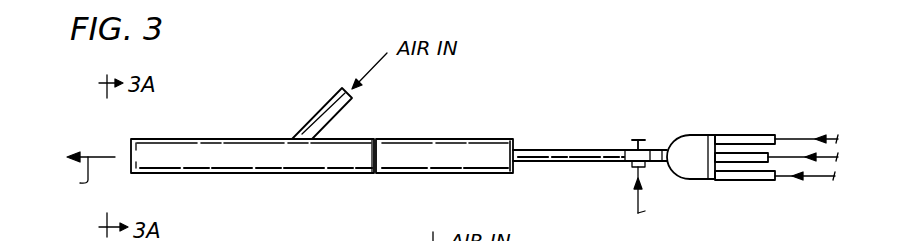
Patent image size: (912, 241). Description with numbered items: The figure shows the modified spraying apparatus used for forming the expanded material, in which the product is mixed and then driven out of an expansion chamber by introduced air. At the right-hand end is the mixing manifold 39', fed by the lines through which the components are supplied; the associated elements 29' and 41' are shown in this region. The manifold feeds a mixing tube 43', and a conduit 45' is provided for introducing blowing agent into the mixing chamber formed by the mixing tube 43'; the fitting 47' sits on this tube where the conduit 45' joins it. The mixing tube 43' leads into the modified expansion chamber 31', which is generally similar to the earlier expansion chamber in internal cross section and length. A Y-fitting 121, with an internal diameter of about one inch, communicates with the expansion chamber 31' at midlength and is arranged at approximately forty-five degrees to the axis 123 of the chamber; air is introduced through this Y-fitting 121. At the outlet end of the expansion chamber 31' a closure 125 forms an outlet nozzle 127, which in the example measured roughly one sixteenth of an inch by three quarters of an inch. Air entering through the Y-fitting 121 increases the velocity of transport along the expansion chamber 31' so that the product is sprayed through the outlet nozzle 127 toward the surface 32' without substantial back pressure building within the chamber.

The Y-fitting 121 is at (319, 112).
The axis 123 is at (290, 174).
The closure 125 is at (133, 171).
The outlet nozzle 127 is at (131, 152).
The modified expansion chamber 31' is at (444, 140).
The mixing tube 43' is at (590, 132).
The valve 47' is at (629, 135).
The conduit 45' is at (661, 192).
The dispensing assembly 29' is at (672, 94).
The mixing manifold 39' is at (710, 137).
The outlet nozzles 41' is at (775, 176).
The outlet to 32' is at (61, 176).